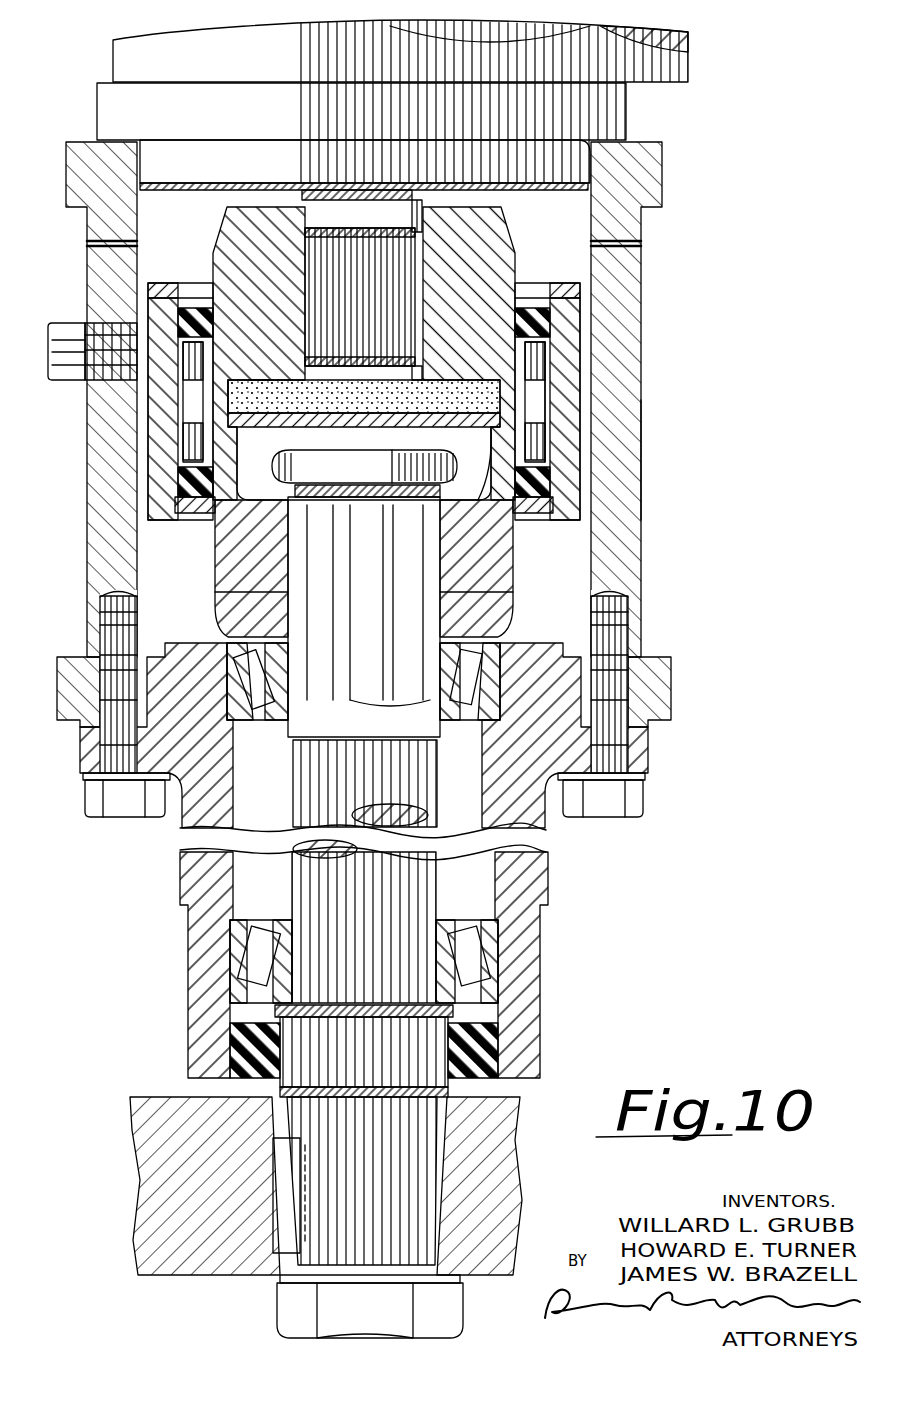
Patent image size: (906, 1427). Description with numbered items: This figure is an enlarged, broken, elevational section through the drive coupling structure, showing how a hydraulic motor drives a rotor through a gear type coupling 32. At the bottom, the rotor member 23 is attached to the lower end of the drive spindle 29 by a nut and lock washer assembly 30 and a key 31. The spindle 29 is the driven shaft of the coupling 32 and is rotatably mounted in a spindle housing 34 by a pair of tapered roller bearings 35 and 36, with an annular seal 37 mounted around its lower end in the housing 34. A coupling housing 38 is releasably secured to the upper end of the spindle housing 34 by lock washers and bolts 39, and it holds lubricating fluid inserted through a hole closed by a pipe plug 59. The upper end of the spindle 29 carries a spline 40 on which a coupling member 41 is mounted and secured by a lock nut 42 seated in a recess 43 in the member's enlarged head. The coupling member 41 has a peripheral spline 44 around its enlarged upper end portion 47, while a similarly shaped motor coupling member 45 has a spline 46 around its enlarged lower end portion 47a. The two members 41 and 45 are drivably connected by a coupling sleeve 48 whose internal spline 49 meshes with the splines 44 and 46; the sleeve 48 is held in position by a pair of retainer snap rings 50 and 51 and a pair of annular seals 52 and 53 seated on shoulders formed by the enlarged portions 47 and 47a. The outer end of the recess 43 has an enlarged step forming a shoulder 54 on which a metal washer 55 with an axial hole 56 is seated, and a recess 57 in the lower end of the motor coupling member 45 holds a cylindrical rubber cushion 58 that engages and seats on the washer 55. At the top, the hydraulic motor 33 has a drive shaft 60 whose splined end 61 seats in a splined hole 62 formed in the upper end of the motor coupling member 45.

The rotor member 23 is at (150, 1178).
The drive spindle 29 is at (265, 1267).
The nut and lock washer assembly 30 is at (453, 1313).
The key 31 is at (287, 1167).
The gear type coupling 32 is at (643, 462).
The hydraulic motor 33 is at (688, 70).
The spindle housing 34 is at (533, 888).
The tapered roller bearing 35 is at (478, 963).
The tapered roller bearing 36 is at (497, 663).
The annular seal 37 is at (493, 1043).
The coupling housing 38 is at (626, 560).
The lock washers and bolts 39 is at (120, 803).
The spline 40 is at (412, 593).
The coupling member 41 is at (505, 551).
The lock nut 42 is at (492, 465).
The recess 43 is at (484, 452).
The peripheral spline 44 is at (185, 445).
The motor coupling member 45 is at (488, 252).
The spline 46 is at (187, 376).
The enlarged upper end portion 47 is at (505, 410).
The enlarged lower end portion 47a is at (505, 383).
The coupling sleeve 48 is at (567, 284).
The internal spline 49 is at (187, 403).
The retainer snap ring 50 is at (200, 300).
The retainer snap ring 51 is at (545, 514).
The annular seal 52 is at (195, 300).
The annular seal 53 is at (203, 514).
The shoulder 54 is at (240, 427).
The metal washer 55 is at (287, 428).
The axial hole 56 is at (422, 417).
The recess 57 is at (240, 380).
The cylindrical cushion 58 is at (258, 380).
The pipe plug 59 is at (70, 373).
The drive shaft 60 is at (333, 210).
The splined end 61 is at (288, 230).
The splined hole 62 is at (412, 213).